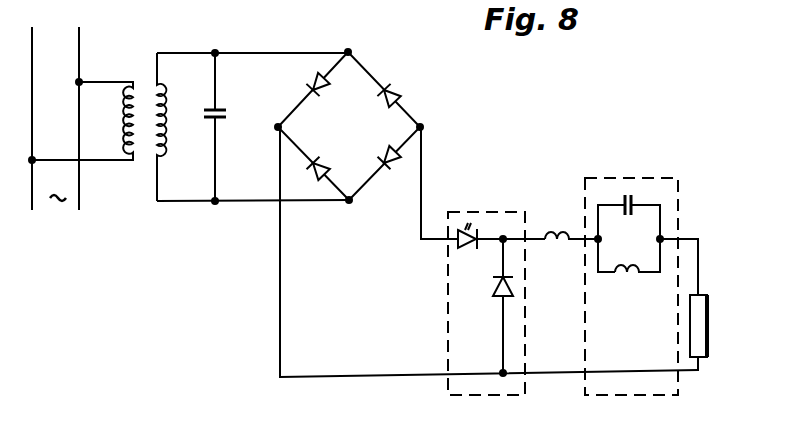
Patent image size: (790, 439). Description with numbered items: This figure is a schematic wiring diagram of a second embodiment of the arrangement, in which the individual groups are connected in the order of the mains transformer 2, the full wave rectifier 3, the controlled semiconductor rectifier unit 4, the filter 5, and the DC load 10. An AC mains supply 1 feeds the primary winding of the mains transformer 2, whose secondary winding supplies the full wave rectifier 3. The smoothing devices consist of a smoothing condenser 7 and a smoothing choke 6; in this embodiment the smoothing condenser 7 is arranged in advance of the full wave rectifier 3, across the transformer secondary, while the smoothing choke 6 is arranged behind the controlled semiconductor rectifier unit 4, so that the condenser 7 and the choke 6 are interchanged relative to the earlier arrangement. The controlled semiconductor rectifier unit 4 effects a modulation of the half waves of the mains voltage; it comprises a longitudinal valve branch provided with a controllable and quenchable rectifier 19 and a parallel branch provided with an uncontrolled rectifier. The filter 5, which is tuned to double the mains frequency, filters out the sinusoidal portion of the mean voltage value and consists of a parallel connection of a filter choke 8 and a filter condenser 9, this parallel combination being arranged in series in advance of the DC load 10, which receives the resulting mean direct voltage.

The AC supply lines 1 is at (73, 42).
The mains transformer 2 is at (149, 73).
The full wave rectifier 3 is at (357, 140).
The controlled semiconductor rectifier unit 4 is at (486, 279).
The filter 5 is at (631, 263).
The smoothing choke 6 is at (561, 222).
The smoothing condenser 7 is at (208, 113).
The filter choke 8 is at (628, 266).
The filter condenser 9 is at (634, 195).
The DC load 10 is at (710, 319).
The controllable and quenchable rectifier 19 is at (464, 248).